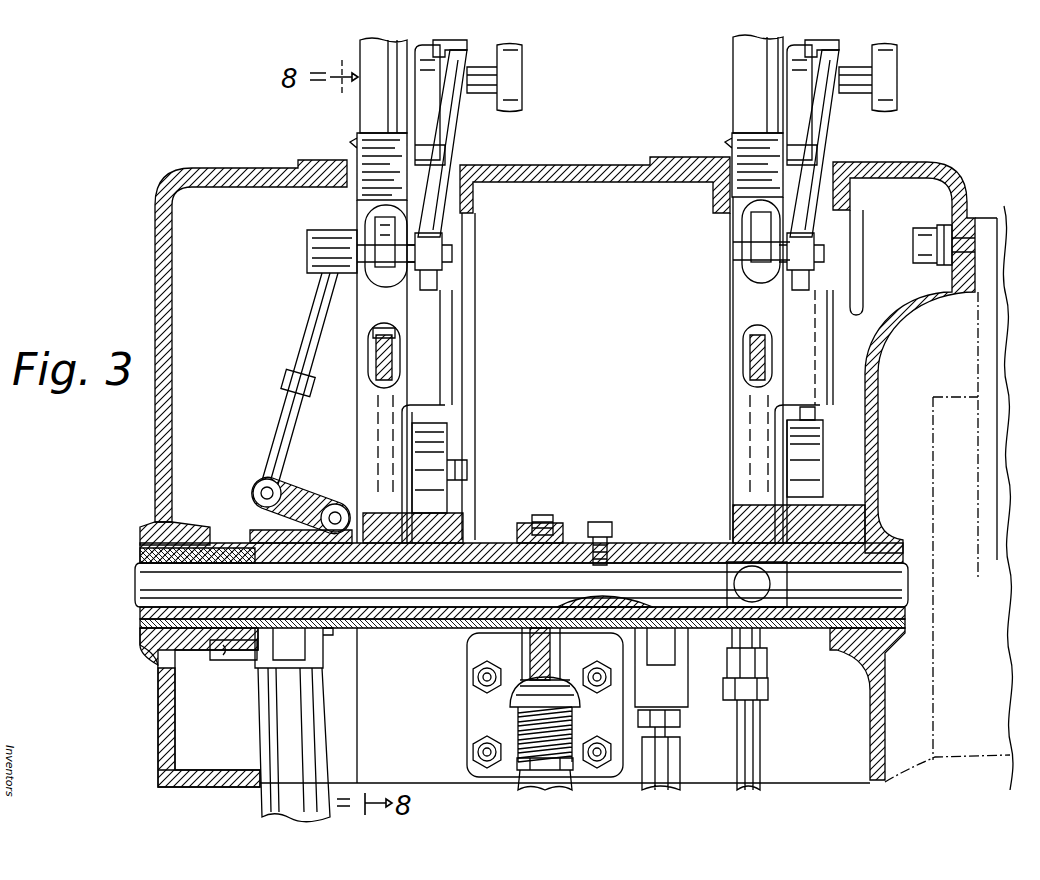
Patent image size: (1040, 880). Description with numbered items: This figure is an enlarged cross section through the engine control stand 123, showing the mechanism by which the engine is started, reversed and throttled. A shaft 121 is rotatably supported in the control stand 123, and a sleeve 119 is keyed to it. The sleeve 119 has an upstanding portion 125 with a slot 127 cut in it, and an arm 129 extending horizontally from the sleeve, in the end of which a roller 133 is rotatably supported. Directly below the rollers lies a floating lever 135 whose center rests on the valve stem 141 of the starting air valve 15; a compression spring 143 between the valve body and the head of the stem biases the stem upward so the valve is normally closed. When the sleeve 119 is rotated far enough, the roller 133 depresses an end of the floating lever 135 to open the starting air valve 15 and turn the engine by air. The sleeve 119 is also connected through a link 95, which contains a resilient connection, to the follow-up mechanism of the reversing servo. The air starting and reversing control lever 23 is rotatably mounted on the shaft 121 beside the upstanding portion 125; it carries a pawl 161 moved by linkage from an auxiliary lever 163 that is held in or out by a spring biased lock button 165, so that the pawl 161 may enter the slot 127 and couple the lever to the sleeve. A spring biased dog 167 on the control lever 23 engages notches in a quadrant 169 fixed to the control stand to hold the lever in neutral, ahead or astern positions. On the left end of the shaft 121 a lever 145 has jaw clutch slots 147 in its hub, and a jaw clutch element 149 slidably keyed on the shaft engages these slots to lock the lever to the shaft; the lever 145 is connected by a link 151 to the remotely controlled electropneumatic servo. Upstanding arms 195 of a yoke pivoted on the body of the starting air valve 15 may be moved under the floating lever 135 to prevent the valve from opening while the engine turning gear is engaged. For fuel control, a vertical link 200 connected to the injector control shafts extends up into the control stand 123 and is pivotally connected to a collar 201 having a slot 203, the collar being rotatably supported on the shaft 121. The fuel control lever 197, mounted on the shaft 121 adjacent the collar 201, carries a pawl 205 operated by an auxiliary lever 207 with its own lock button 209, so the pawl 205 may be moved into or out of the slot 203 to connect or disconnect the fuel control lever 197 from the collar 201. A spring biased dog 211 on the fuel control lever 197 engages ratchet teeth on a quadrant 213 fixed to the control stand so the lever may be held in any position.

The starting air valve 15 is at (560, 784).
The air starting and reversing control lever 23 is at (378, 117).
The link 95 is at (680, 745).
The sleeve 119 is at (620, 552).
The shaft 121 is at (150, 580).
The engine control stand 123 is at (162, 240).
The upstanding portion 125 is at (435, 540).
The slot 127 is at (443, 448).
The arm 129 is at (565, 525).
The roller 133 is at (545, 515).
The floating lever 135 is at (535, 648).
The valve stem 141 is at (562, 735).
The compression spring 143 is at (525, 718).
The lever 145 is at (226, 660).
The jaw clutch slots 147 is at (250, 530).
The jaw clutch element 149 is at (258, 507).
The link 151 is at (268, 717).
The pawl 161 is at (450, 412).
The auxiliary lever 163 is at (445, 150).
The lock button 165 is at (508, 72).
The dog 167 is at (383, 325).
The quadrant 169 is at (372, 360).
The upstanding arms 195 is at (560, 690).
The fuel control lever 197 is at (748, 70).
The vertical link 200 is at (762, 790).
The collar 201 is at (808, 535).
The slot 203 is at (815, 442).
The pawl 205 is at (810, 412).
The auxiliary lever 207 is at (833, 147).
The lock button 209 is at (882, 80).
The dog 211 is at (750, 330).
The quadrant 213 is at (755, 372).